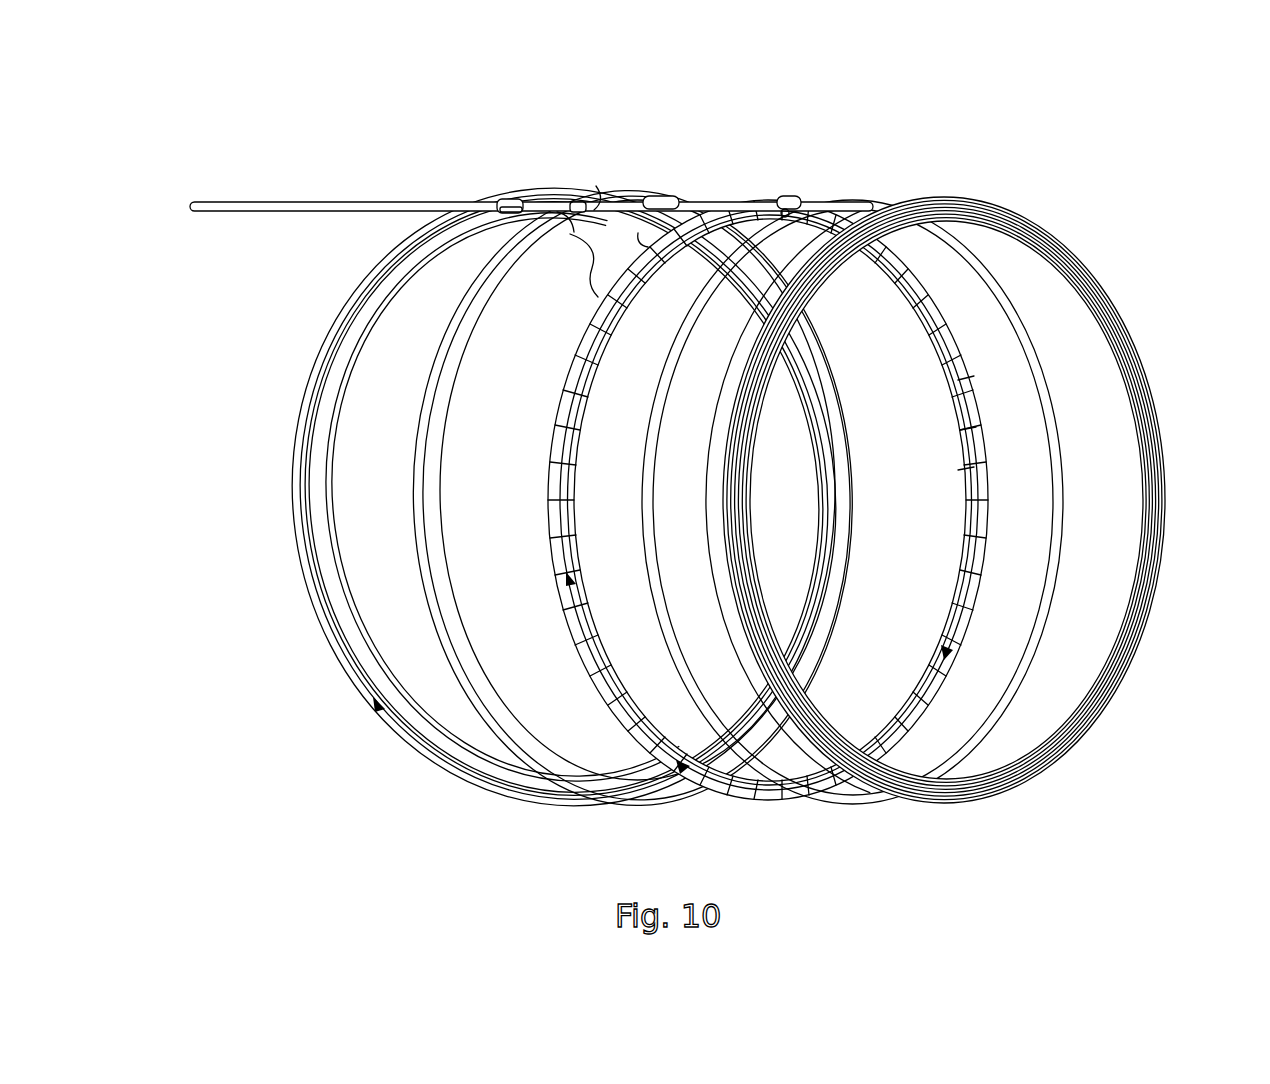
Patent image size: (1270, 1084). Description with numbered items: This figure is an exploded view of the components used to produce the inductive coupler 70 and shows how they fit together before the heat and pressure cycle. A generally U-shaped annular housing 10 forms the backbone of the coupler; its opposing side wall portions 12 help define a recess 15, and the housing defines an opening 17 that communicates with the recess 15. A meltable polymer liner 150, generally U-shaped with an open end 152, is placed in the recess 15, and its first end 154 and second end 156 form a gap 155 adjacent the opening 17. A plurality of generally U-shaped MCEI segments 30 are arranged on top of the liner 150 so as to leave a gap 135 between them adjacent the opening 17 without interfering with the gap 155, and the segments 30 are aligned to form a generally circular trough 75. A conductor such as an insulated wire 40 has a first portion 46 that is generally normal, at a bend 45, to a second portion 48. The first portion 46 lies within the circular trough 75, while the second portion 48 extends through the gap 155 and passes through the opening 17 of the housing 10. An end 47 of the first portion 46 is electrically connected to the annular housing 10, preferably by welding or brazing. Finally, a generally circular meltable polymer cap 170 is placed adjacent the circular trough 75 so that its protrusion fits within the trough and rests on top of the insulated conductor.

The inductive coupler 70 is at (693, 471).
The insulated wire 40 is at (542, 497).
The annular housing 10 is at (300, 525).
The side wall portions 12 is at (338, 640).
The recess 15 is at (395, 738).
The second portion 48 is at (248, 203).
The opening 17 is at (500, 200).
The second end 156 is at (598, 195).
The first end 154 is at (647, 196).
The end of the first portion 47 is at (789, 181).
The gap between MCEI segments 135 is at (731, 176).
The gap 155 is at (585, 290).
The meltable polymer liner 150 is at (609, 498).
The open end 152 is at (440, 578).
The circular trough 75 is at (763, 527).
The MCEI segments 30 is at (963, 460).
The bend 45 is at (881, 480).
The first portion 46 is at (1053, 425).
The meltable polymer cap 170 is at (1100, 312).